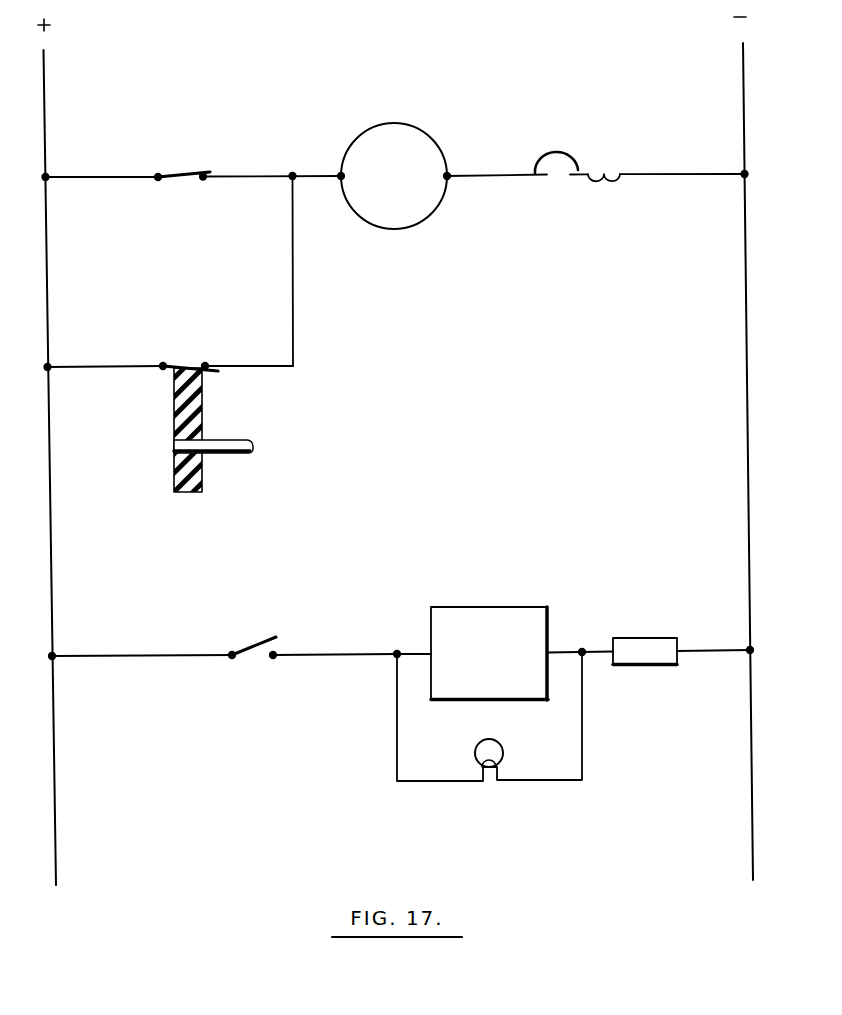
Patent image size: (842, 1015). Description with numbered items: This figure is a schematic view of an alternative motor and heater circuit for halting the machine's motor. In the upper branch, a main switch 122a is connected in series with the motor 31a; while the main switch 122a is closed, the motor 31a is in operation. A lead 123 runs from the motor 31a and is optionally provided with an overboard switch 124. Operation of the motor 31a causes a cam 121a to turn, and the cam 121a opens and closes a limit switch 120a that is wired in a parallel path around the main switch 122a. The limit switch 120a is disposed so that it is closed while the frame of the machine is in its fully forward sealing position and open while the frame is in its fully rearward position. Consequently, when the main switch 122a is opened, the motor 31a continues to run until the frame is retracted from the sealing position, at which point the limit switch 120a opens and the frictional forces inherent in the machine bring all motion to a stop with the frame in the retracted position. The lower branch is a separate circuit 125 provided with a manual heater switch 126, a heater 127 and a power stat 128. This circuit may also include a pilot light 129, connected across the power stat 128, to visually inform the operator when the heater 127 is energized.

The motor 31a is at (393, 123).
The limit switch 120a is at (185, 368).
The cam 121a is at (174, 460).
The main switch 122a is at (195, 172).
The lead 123 is at (484, 177).
The overboard switch 124 is at (640, 154).
The separate circuit 125 is at (138, 658).
The manual heater switch 126 is at (254, 641).
The heater 127 is at (635, 638).
The power stat 128 is at (486, 607).
The pilot light 129 is at (476, 751).